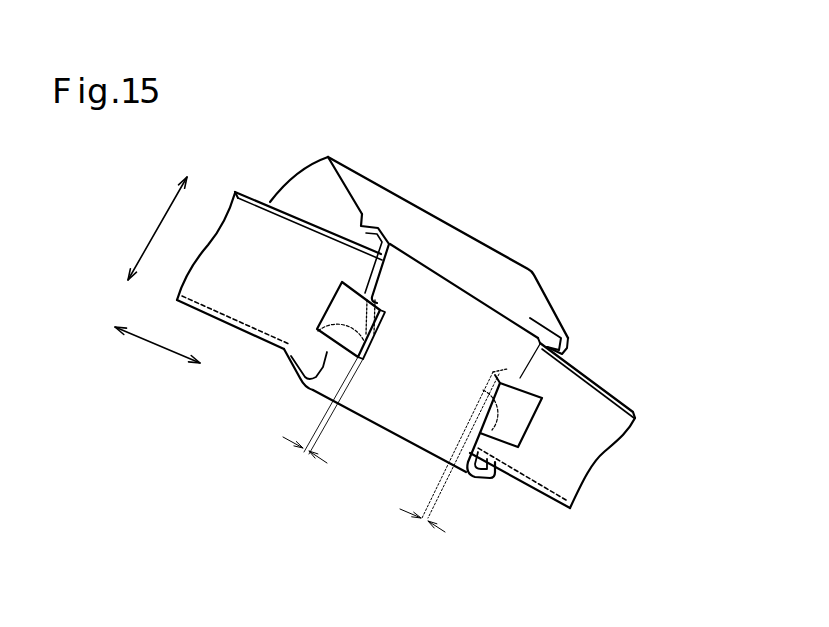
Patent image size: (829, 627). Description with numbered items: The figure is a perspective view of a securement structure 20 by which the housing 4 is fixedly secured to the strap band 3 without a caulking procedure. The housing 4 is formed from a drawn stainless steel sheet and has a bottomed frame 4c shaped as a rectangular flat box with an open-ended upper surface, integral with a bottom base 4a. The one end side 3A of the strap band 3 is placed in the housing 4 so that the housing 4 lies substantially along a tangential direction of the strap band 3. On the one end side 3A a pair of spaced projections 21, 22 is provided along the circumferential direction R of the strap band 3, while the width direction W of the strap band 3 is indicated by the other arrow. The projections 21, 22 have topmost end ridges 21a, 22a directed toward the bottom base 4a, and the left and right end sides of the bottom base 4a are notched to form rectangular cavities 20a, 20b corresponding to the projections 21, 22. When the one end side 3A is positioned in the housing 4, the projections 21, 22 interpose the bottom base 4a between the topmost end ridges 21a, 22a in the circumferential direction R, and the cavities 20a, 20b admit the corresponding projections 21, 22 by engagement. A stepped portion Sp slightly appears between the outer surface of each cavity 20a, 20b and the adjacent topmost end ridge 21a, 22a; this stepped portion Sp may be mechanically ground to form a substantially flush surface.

The strap band 3 is at (618, 391).
The one end side of the strap band 3A is at (250, 212).
The housing 4 is at (437, 248).
The bottom base 4a is at (440, 303).
The bottomed frame 4c is at (373, 178).
The securement structure 20 is at (384, 293).
The rectangular cavity 20a is at (300, 370).
The rectangular cavity 20b is at (481, 480).
The projection 21 is at (342, 318).
The topmost end ridge 21a is at (393, 317).
The projection 22 is at (513, 418).
The topmost end ridge 22a is at (484, 388).
The stepped portion Sp is at (388, 454).
The width direction W is at (157, 228).
The circumferential direction R is at (157, 354).